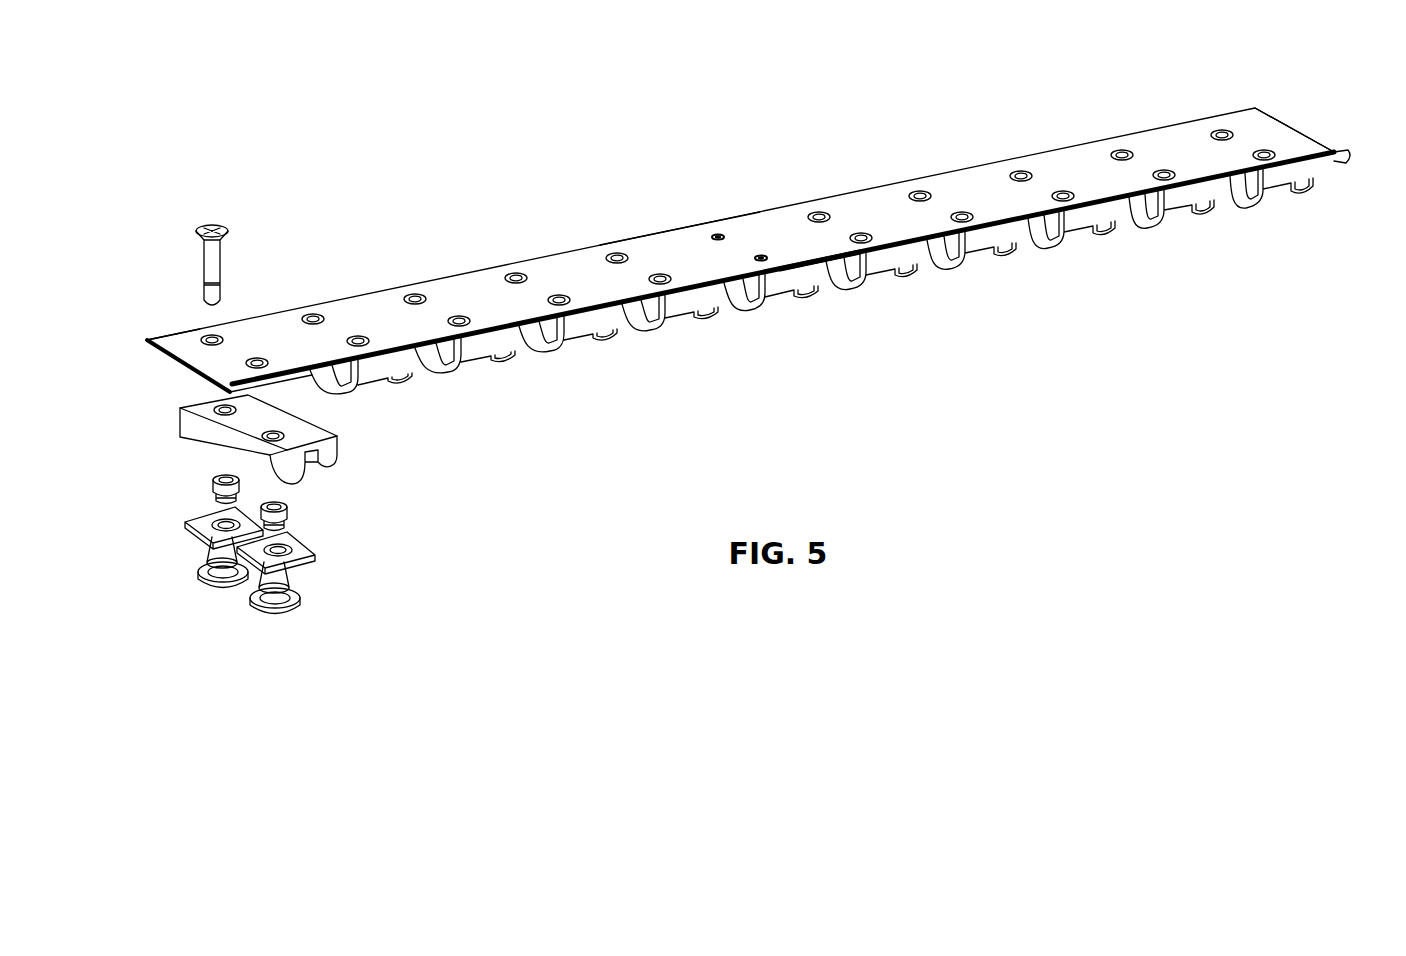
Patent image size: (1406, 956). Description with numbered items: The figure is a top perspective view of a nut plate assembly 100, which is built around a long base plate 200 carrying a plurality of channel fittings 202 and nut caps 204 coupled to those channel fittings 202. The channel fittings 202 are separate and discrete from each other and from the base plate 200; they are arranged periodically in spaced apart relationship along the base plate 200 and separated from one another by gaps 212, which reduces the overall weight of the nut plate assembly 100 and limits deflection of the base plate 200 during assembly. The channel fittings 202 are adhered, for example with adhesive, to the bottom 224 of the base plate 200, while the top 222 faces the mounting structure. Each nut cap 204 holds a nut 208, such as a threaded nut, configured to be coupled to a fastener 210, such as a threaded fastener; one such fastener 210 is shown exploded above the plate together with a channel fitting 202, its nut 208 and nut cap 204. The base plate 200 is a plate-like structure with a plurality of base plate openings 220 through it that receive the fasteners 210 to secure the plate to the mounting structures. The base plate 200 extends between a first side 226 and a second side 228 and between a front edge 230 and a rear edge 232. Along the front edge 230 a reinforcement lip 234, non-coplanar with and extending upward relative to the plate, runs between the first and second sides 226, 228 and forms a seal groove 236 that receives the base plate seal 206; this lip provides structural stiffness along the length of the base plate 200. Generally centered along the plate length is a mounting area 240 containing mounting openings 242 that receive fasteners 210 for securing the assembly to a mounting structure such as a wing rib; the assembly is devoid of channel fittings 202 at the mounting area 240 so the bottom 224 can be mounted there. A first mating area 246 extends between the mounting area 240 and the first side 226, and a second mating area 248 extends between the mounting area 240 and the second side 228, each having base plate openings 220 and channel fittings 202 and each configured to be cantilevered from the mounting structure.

The nut plate assembly 100 is at (618, 176).
The base plate 200 is at (772, 222).
The channel fittings 202 is at (229, 604).
The nut caps 204 is at (292, 580).
The base plate seal 206 is at (210, 384).
The nuts 208 is at (290, 494).
The fasteners 210 is at (203, 226).
The gaps 212 is at (445, 376).
The base plate openings 220 is at (207, 326).
The top 222 is at (178, 343).
The bottom 224 is at (180, 370).
The first side 226 is at (178, 376).
The second side 228 is at (1300, 135).
The front edge 230 is at (832, 274).
The rear edge 232 is at (686, 216).
The reinforcement lip 234 is at (745, 283).
The seal groove 236 is at (818, 240).
The mounting area 240 is at (740, 232).
The mounting openings 242 is at (714, 222).
The first mating area 246 is at (476, 292).
The second mating area 248 is at (1075, 165).